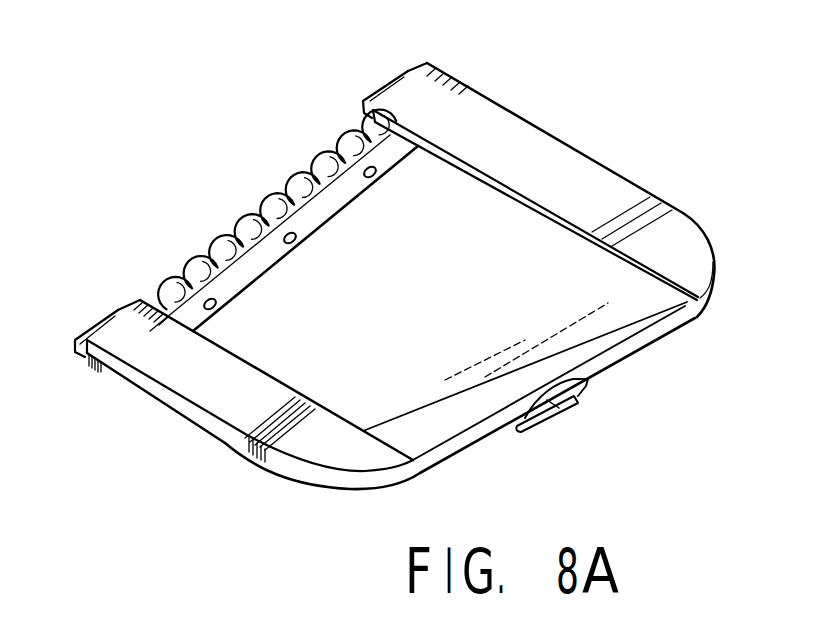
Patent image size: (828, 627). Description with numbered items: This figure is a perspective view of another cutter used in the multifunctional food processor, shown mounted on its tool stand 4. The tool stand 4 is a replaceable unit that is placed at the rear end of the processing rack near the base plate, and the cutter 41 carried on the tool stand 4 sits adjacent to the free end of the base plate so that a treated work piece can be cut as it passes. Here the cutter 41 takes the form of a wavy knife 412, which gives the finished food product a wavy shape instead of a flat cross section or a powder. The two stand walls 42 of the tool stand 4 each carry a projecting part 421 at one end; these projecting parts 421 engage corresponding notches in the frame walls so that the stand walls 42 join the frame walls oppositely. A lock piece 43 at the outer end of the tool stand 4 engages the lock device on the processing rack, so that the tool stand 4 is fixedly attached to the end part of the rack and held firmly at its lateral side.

The tool stand 4 is at (392, 394).
The cutter 41 is at (284, 212).
The wavy knife 412 is at (283, 198).
The stand wall 42 is at (523, 162).
The projecting part 421 is at (373, 110).
The lock piece 43 is at (547, 400).